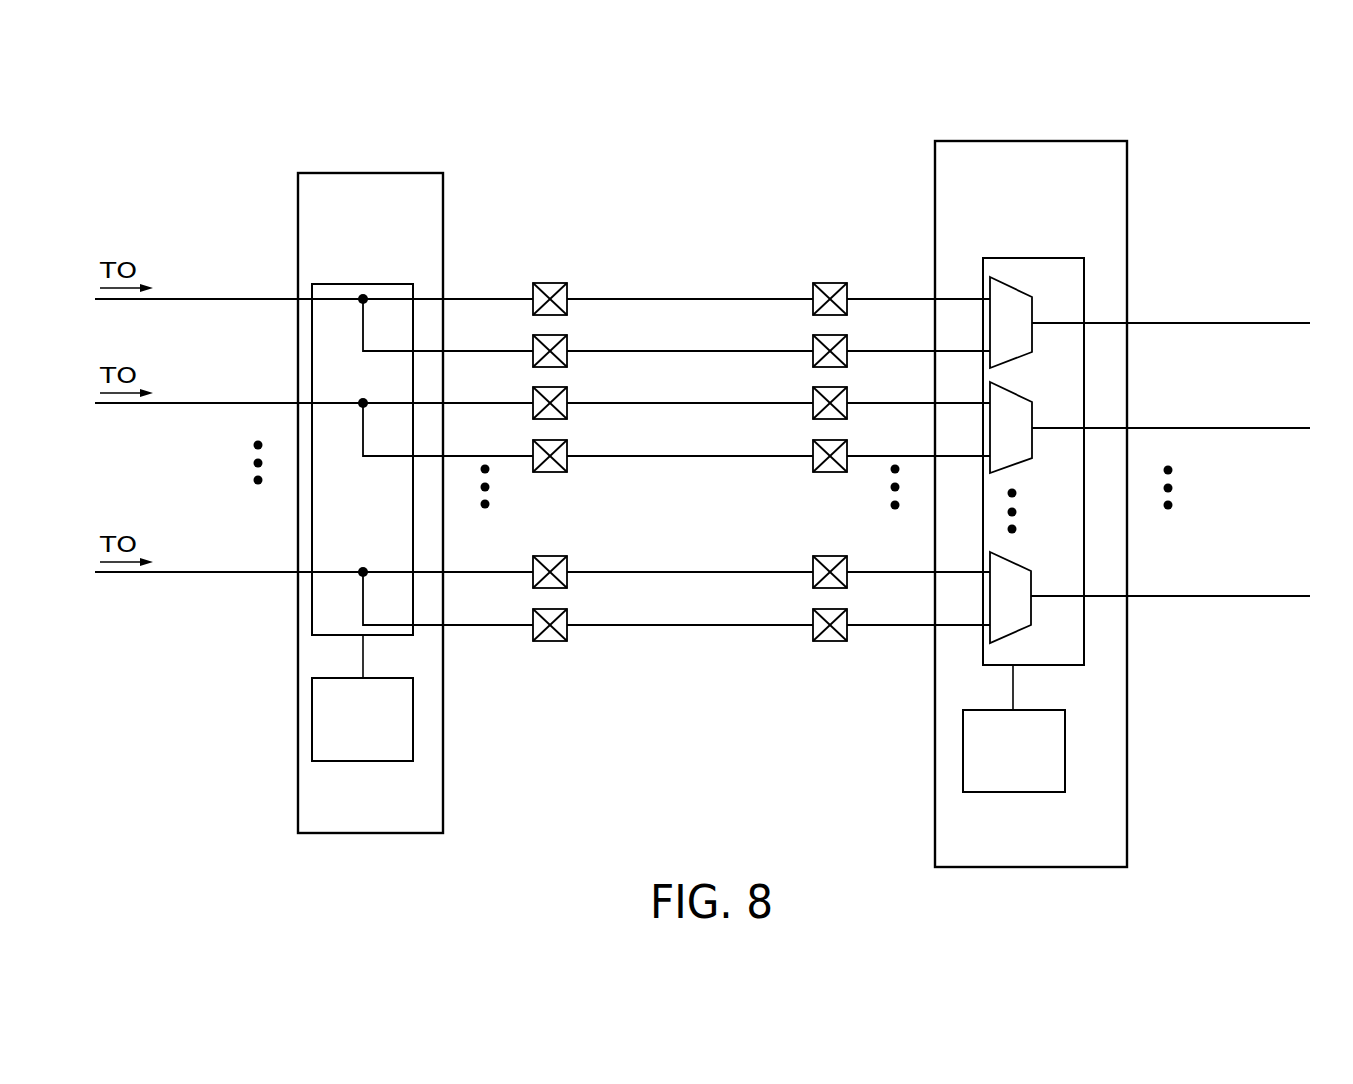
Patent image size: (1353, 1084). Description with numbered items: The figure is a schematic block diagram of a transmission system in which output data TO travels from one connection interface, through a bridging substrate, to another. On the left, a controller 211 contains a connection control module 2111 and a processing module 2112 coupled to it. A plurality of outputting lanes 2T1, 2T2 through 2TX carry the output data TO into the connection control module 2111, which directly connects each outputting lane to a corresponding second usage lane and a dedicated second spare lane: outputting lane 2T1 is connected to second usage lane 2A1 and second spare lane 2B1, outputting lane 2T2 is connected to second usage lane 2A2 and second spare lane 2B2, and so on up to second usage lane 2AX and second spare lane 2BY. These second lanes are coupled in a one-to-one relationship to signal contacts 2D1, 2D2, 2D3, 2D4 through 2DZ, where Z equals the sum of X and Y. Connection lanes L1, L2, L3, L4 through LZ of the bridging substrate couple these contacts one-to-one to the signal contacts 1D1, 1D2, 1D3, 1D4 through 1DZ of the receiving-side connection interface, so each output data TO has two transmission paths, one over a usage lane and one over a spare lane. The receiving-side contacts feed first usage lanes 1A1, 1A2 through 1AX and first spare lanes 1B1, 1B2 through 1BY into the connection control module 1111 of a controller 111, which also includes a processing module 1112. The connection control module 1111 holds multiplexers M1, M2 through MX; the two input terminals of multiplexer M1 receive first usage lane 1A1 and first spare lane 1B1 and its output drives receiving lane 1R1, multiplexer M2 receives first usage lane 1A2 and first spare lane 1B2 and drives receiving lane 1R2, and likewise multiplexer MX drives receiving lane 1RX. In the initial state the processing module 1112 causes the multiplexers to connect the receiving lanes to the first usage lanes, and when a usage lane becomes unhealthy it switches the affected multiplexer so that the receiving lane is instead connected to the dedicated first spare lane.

The controller 211 is at (364, 173).
The connection control module 2111 is at (364, 284).
The processing module 2112 is at (363, 761).
The controller 111 is at (998, 141).
The connection control module 1111 is at (1033, 258).
The processing module 1112 is at (1013, 792).
The outputting lane 2T1 is at (258, 299).
The outputting lane 2T2 is at (258, 403).
The outputting lane 2TX is at (258, 572).
The second usage lane 2A1 is at (485, 299).
The second spare lane 2B1 is at (485, 351).
The second usage lane 2A2 is at (485, 403).
The second spare lane 2B2 is at (485, 456).
The second usage lane 2AX is at (485, 572).
The second spare lane 2BY is at (485, 625).
The signal contact 2D1 is at (549, 282).
The signal contact 2D2 is at (552, 336).
The signal contact 2D3 is at (552, 389).
The signal contact 2D4 is at (552, 442).
The signal contact 2DZ is at (549, 642).
The connection lane L1 is at (687, 299).
The connection lane L2 is at (687, 351).
The connection lane L3 is at (687, 403).
The connection lane L4 is at (687, 456).
The connection lane LZ is at (690, 625).
The signal contact 1D1 is at (830, 282).
The signal contact 1D2 is at (828, 336).
The signal contact 1D3 is at (828, 389).
The signal contact 1D4 is at (828, 442).
The signal contact 1DZ is at (830, 642).
The first usage lane 1A1 is at (900, 299).
The first spare lane 1B1 is at (900, 351).
The first usage lane 1A2 is at (900, 403).
The first spare lane 1B2 is at (900, 456).
The first usage lane 1AX is at (900, 572).
The first spare lane 1BY is at (900, 625).
The multiplexer M1 is at (1012, 284).
The multiplexer M2 is at (1012, 389).
The multiplexer MX is at (1012, 559).
The receiving lane 1R1 is at (1170, 323).
The receiving lane 1R2 is at (1170, 428).
The receiving lane 1RX is at (1170, 596).